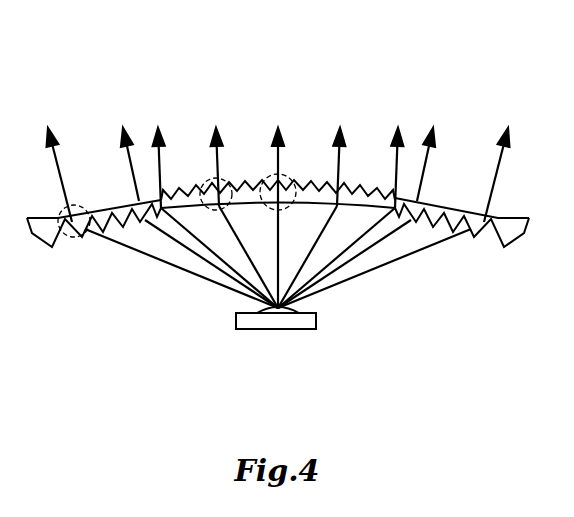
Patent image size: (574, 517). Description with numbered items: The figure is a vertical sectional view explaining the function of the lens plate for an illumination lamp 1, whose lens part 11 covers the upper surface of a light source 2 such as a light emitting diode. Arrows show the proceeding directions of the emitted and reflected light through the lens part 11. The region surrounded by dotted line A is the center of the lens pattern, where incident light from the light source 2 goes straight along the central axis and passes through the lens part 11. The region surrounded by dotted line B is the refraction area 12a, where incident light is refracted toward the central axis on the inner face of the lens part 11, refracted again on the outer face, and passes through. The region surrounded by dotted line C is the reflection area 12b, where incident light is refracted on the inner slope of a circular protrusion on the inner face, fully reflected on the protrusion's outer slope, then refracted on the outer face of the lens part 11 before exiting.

The lens plate for an illumination lamp 1 is at (470, 71).
The lens part 11 is at (111, 200).
The refraction area 12a is at (398, 192).
The reflection area 12b is at (42, 249).
The light source 2 is at (267, 314).
The center of the lens pattern A is at (287, 178).
The refraction area region B is at (206, 210).
The reflection area region C is at (76, 240).